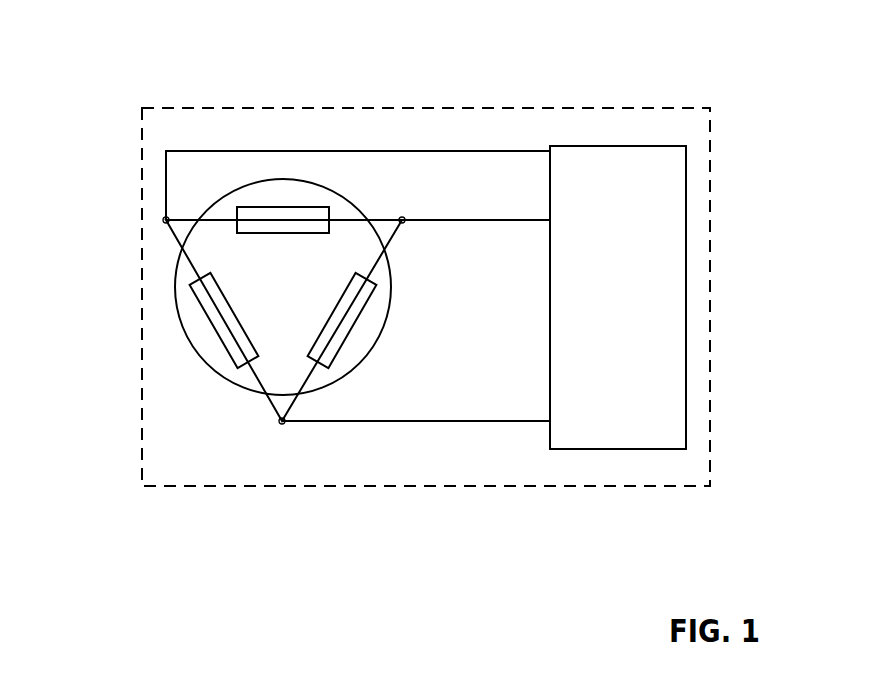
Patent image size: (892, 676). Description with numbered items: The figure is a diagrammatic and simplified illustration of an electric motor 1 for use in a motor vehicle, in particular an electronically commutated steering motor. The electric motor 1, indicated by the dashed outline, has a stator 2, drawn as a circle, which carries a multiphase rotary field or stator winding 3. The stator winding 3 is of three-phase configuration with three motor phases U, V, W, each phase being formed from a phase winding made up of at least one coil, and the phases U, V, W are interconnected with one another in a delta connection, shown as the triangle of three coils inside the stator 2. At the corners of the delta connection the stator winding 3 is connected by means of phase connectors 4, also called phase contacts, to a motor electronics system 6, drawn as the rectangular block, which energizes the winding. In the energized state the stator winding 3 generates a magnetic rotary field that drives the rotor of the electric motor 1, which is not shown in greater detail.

The electric motor 1 is at (710, 108).
The stator 2 is at (223, 380).
The stator winding 3 is at (198, 339).
The phase connector 4 is at (166, 220).
The motor electronics system 6 is at (686, 318).
The phase U is at (493, 151).
The phase V is at (525, 220).
The phase W is at (480, 422).